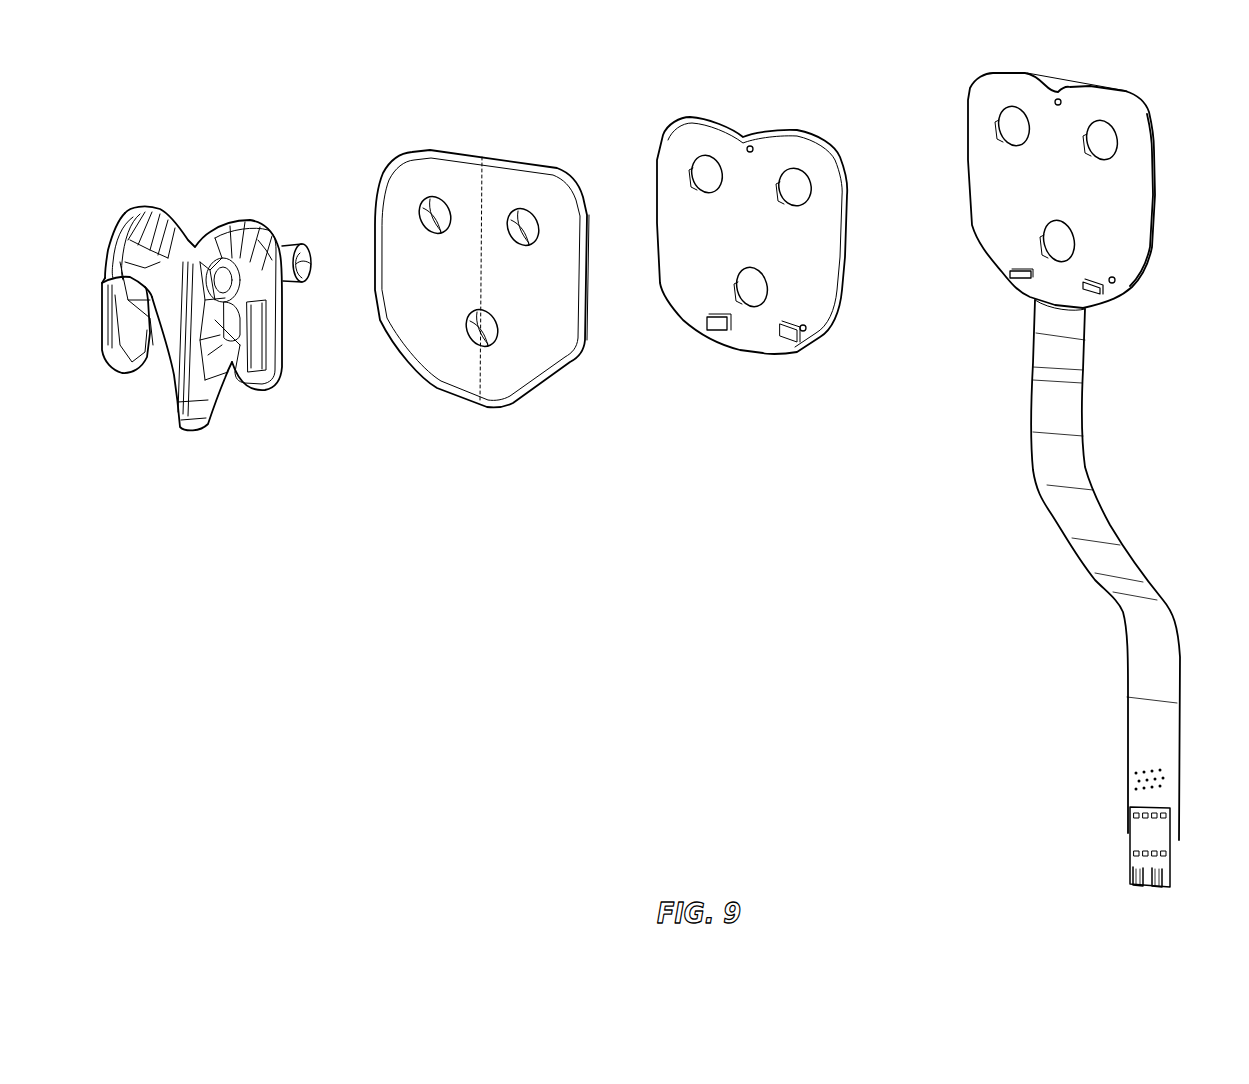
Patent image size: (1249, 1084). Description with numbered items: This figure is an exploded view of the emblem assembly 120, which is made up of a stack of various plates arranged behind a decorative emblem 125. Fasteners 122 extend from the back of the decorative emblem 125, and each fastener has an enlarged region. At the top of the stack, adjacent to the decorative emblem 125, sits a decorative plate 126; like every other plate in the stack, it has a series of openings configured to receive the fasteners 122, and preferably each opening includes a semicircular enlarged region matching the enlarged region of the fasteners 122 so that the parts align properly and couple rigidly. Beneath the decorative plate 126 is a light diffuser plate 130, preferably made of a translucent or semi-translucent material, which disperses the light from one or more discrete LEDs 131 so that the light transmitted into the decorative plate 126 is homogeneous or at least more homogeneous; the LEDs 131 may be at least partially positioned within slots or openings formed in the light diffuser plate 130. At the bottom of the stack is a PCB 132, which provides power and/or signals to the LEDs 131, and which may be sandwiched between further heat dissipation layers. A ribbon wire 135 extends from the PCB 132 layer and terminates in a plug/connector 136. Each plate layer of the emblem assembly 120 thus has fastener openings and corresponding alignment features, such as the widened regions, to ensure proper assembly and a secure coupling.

The emblem assembly 120 is at (1167, 38).
The fasteners 122 is at (287, 250).
The decorative emblem 125 is at (155, 250).
The decorative plate 126 is at (508, 182).
The light diffuser plate 130 is at (847, 305).
The LEDs 131 is at (1105, 290).
The PCB 132 is at (1155, 198).
The ribbon wire 135 is at (1072, 517).
The plug/connector 136 is at (1165, 853).